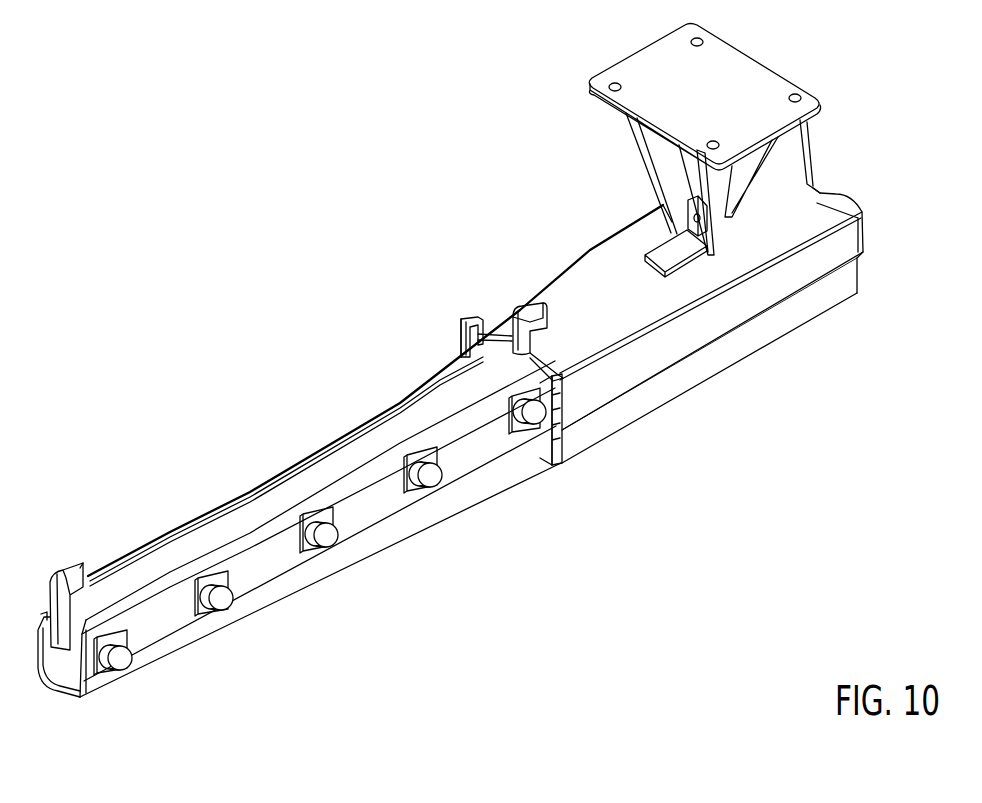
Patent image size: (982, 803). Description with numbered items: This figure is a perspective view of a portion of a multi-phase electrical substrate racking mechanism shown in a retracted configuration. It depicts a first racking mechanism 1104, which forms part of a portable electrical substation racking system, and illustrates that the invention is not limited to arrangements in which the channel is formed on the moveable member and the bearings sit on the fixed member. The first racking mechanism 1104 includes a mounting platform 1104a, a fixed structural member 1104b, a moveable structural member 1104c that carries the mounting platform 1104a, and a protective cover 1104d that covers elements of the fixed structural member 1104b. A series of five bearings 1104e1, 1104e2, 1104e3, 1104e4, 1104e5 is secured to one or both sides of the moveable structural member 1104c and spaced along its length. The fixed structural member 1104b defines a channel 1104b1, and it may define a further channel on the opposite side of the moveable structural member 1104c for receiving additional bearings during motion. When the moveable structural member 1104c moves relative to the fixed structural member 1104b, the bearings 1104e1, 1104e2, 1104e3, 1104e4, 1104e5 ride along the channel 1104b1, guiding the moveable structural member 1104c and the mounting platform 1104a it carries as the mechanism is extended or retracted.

The first racking mechanism 1104 is at (430, 358).
The mounting platform 1104a is at (752, 70).
The fixed structural member 1104b is at (693, 372).
The channel 1104b1 is at (567, 457).
The moveable structural member 1104c is at (262, 567).
The protective cover 1104d is at (567, 280).
The bearing 1104e1 is at (123, 657).
The bearing 1104e2 is at (222, 600).
The bearing 1104e3 is at (327, 537).
The bearing 1104e4 is at (432, 477).
The bearing 1104e5 is at (535, 420).